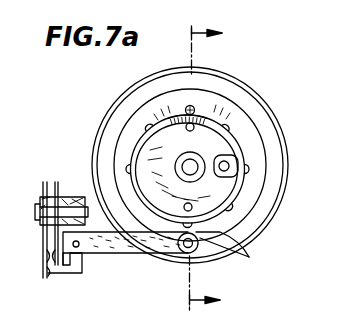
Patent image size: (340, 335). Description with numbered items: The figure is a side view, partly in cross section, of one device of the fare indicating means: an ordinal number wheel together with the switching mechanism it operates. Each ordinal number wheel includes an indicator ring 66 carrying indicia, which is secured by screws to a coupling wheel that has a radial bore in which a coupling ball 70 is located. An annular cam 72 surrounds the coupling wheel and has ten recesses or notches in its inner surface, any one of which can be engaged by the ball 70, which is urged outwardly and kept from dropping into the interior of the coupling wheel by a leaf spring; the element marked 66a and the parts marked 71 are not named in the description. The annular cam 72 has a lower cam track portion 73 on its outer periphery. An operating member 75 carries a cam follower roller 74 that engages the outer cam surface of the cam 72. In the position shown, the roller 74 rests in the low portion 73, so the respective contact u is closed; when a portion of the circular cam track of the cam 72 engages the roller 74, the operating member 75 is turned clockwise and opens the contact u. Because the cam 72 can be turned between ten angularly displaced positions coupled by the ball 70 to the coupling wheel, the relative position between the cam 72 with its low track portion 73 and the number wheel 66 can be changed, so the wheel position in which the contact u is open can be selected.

The indicator ring 66 is at (117, 100).
The carrier plate 66a is at (184, 121).
The coupling ball 70 is at (188, 105).
The lugs 71 is at (232, 122).
The annular cam 72 is at (232, 82).
The lower cam track portion 73 is at (249, 257).
The cam follower roller 74 is at (205, 252).
The operating member 75 is at (120, 248).
The contact u is at (50, 273).